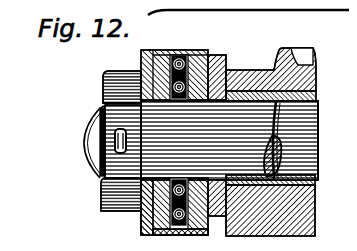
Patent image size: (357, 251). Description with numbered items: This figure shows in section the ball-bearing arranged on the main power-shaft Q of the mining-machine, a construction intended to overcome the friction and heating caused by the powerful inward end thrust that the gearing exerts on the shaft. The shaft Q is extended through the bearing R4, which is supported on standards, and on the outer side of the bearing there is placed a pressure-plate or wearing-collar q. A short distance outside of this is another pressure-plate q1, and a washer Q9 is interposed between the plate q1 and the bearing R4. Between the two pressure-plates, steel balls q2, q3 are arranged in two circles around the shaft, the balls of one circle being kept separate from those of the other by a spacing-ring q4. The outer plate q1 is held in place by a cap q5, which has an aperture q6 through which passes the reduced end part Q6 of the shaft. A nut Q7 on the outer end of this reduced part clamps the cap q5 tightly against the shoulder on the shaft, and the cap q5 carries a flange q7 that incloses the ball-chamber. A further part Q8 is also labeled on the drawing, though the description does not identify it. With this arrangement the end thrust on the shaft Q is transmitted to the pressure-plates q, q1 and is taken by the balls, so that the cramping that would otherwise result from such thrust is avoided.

The steel balls q3 is at (192, 107).
The shaft Q is at (311, 110).
The bearing R4 is at (271, 127).
The flange q7 is at (170, 47).
The pressure-plate or wearing-collar q is at (204, 47).
The steel balls q2 is at (173, 223).
The pressure-plate q1 is at (137, 205).
The spacing-ring q4 is at (152, 225).
The washer Q9 is at (211, 210).
The cap q5 is at (122, 74).
The aperture q6 is at (125, 90).
The reduced end part of the shaft Q6 is at (100, 170).
The nut Q7 is at (96, 200).
The slot Q8 is at (108, 132).